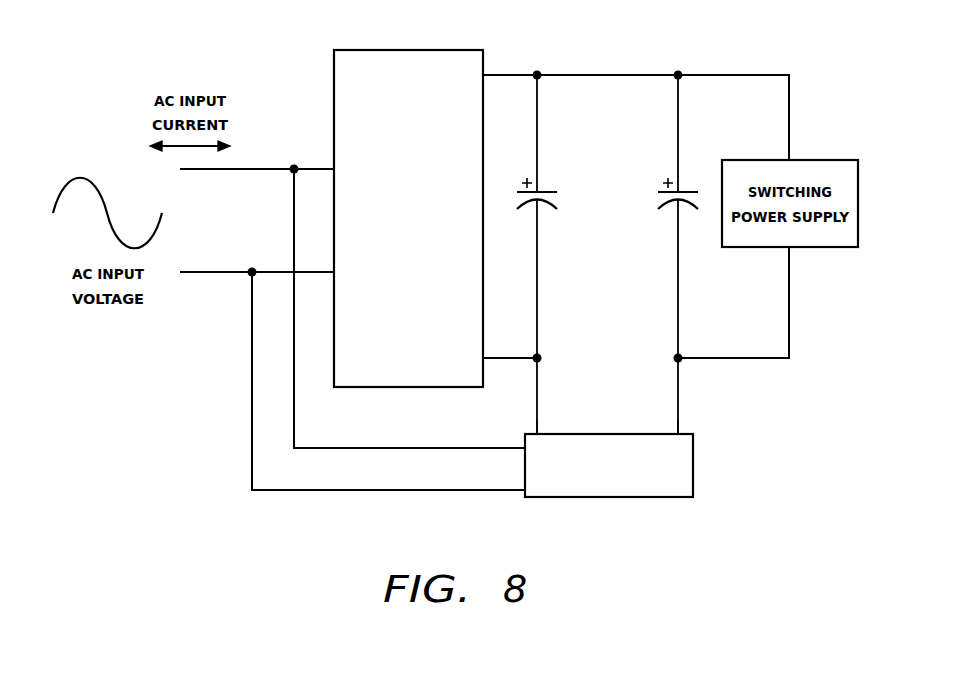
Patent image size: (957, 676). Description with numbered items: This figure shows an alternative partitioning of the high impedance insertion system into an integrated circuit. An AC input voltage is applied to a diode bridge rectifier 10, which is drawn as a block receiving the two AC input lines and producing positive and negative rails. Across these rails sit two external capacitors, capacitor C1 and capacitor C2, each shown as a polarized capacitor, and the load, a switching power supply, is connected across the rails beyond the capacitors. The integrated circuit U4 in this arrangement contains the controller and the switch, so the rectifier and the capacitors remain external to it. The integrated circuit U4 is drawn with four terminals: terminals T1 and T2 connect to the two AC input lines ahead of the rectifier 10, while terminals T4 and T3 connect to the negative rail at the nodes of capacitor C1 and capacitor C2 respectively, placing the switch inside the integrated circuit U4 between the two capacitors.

The diode bridge rectifier 10 is at (365, 50).
The capacitor C1 is at (539, 254).
The capacitor C2 is at (680, 254).
The integrated circuit U4 is at (609, 465).
The terminal T1 is at (510, 439).
The terminal T2 is at (510, 480).
The terminal T3 is at (666, 426).
The terminal T4 is at (550, 426).